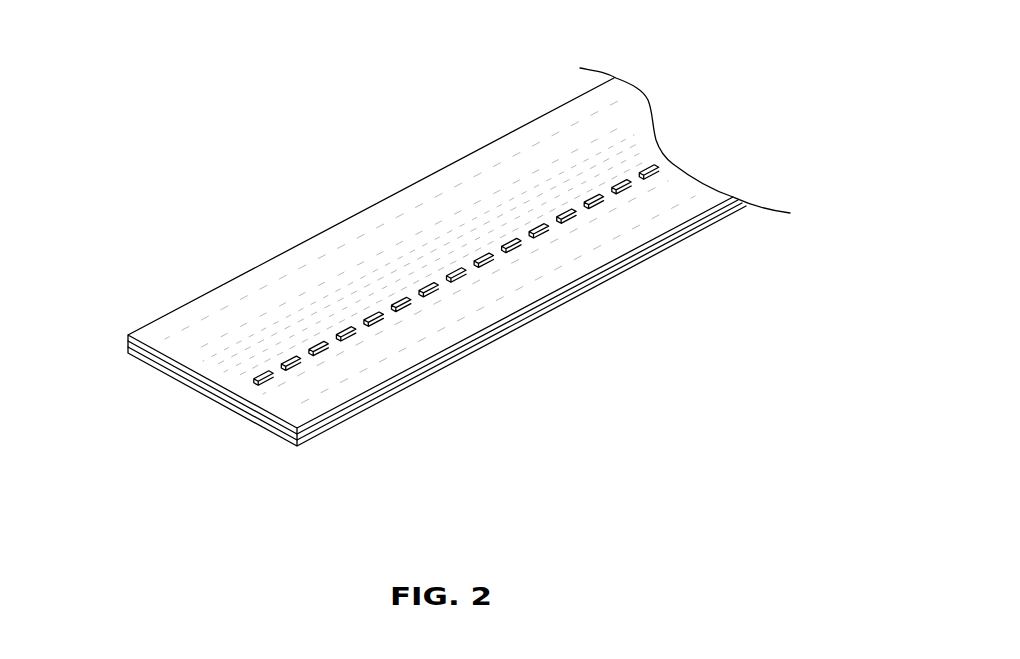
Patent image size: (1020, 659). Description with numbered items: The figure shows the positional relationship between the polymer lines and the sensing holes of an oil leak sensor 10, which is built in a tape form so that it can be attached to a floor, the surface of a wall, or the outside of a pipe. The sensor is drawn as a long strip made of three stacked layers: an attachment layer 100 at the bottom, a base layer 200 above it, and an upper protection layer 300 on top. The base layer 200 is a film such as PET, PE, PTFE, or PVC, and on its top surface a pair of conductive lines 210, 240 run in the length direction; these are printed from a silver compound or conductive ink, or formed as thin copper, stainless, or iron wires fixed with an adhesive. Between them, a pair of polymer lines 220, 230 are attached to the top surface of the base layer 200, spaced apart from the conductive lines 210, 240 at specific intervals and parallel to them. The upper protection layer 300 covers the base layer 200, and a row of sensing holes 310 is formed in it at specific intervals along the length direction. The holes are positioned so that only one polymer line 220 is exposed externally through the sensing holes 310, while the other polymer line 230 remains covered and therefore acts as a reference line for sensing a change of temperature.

The oil leak sensor 10 is at (442, 118).
The attachment layer 100 is at (245, 413).
The base layer 200 is at (207, 389).
The conductive line 210 is at (382, 367).
The polymer line 220 is at (453, 288).
The polymer line 230 is at (340, 297).
The conductive line 240 is at (237, 305).
The upper protection layer 300 is at (163, 360).
The sensing holes 310 is at (627, 191).